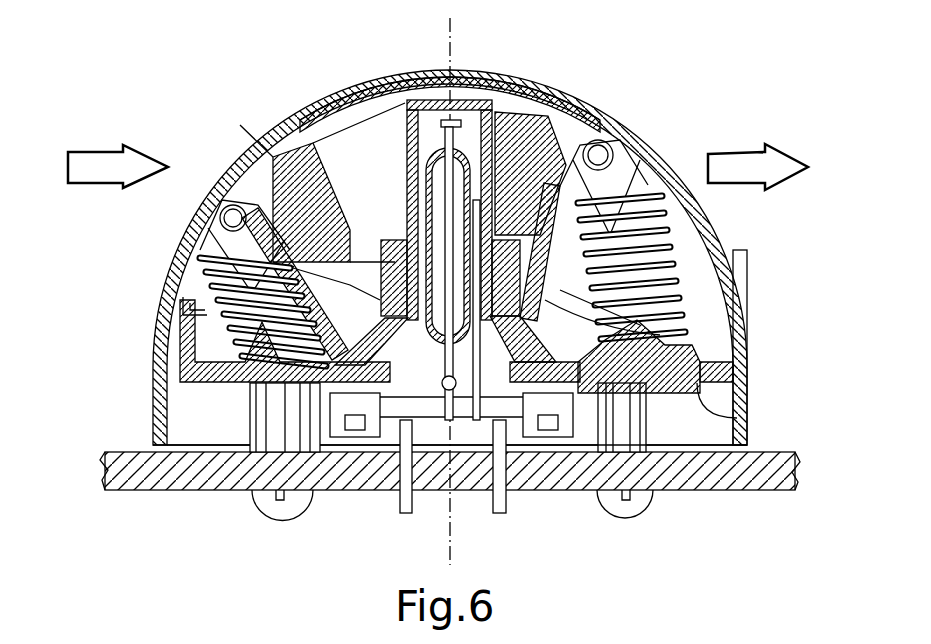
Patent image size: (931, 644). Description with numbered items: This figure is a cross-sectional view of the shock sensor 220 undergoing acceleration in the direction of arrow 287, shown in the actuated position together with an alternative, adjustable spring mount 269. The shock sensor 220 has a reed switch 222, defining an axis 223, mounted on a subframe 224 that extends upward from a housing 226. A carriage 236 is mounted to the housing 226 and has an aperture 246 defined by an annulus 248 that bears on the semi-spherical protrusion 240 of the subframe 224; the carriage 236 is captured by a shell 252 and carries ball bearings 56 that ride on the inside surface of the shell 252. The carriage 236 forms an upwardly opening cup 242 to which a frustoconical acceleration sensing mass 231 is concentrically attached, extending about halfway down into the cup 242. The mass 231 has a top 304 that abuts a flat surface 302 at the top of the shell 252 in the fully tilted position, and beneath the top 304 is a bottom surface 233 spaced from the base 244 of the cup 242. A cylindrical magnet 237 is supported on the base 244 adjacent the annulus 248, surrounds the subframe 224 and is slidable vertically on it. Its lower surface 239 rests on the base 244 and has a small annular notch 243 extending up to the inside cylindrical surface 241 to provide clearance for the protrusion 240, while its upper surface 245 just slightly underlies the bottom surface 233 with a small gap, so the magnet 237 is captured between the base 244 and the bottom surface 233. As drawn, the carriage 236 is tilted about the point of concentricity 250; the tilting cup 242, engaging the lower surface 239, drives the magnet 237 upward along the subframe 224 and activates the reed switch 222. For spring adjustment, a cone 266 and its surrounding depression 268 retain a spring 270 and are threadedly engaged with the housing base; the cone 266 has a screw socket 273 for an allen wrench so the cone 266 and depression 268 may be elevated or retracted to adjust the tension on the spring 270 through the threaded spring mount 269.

The ball bearings 56 is at (228, 186).
The shock sensor 220 is at (693, 101).
The reed switch 222 is at (430, 98).
The axis 223 is at (448, 42).
The subframe 224 is at (405, 101).
The housing 226 is at (737, 391).
The acceleration sensing mass 231 is at (583, 107).
The bottom surface 233 is at (336, 270).
The carriage 236 is at (262, 195).
The cylindrical magnet 237 is at (580, 293).
The lower surface 239 is at (205, 230).
The semi-spherical protrusion 240 is at (538, 427).
The inside cylindrical surface 241 is at (407, 200).
The cup 242 is at (605, 312).
The annular notch 243 is at (436, 425).
The base 244 is at (660, 345).
The upper surface 245 is at (396, 240).
The aperture 246 is at (372, 425).
The annulus 248 is at (355, 420).
The point of concentricity 250 is at (452, 430).
The shell 252 is at (273, 137).
The cone 266 is at (656, 322).
The depression 268 is at (745, 352).
The spring mount 269 is at (705, 418).
The spring 270 is at (173, 274).
The screw socket 273 is at (665, 445).
The arrow 287 is at (88, 150).
The flat surface 302 is at (513, 85).
The top 304 is at (527, 103).